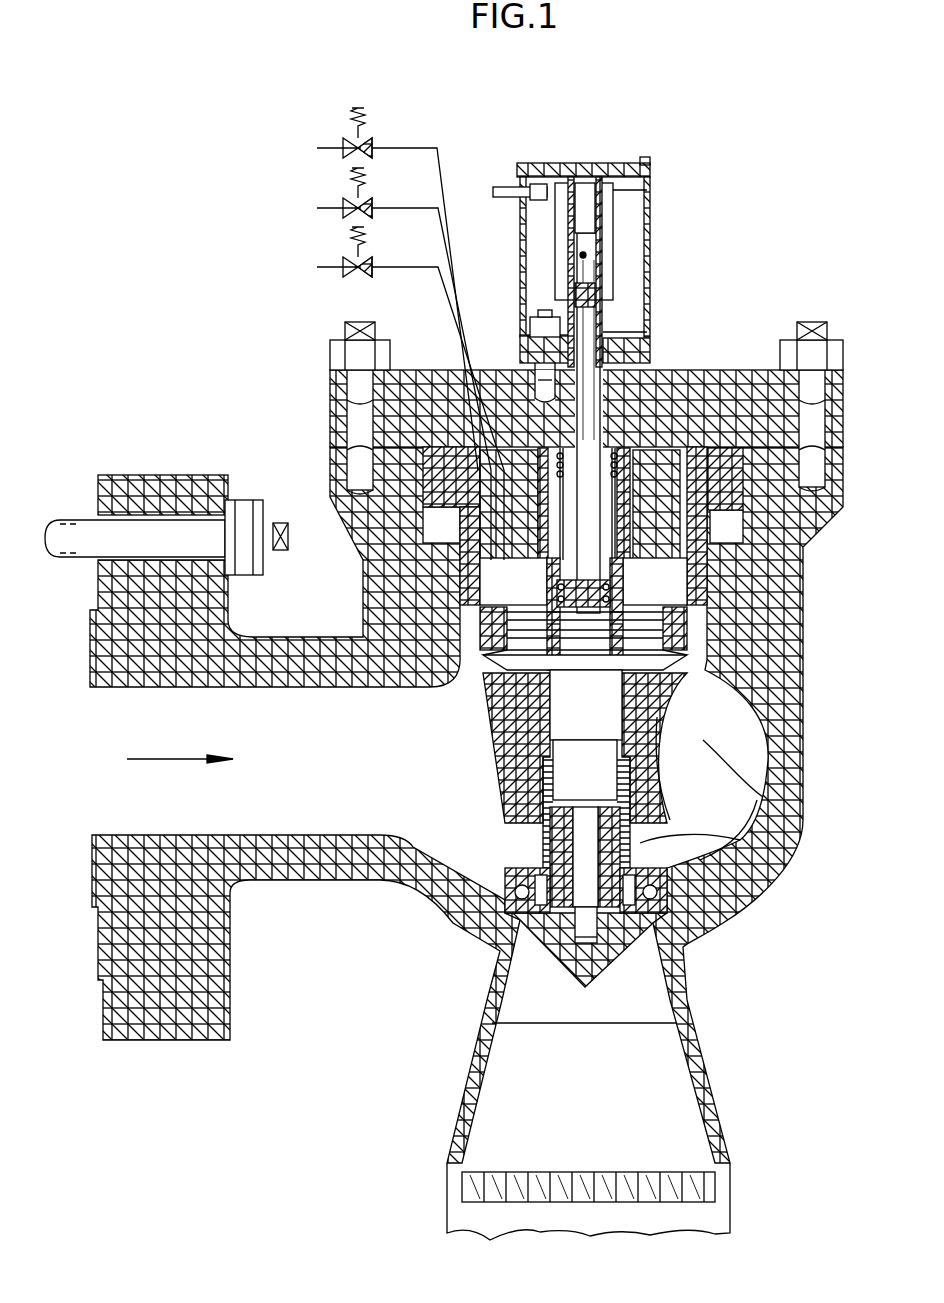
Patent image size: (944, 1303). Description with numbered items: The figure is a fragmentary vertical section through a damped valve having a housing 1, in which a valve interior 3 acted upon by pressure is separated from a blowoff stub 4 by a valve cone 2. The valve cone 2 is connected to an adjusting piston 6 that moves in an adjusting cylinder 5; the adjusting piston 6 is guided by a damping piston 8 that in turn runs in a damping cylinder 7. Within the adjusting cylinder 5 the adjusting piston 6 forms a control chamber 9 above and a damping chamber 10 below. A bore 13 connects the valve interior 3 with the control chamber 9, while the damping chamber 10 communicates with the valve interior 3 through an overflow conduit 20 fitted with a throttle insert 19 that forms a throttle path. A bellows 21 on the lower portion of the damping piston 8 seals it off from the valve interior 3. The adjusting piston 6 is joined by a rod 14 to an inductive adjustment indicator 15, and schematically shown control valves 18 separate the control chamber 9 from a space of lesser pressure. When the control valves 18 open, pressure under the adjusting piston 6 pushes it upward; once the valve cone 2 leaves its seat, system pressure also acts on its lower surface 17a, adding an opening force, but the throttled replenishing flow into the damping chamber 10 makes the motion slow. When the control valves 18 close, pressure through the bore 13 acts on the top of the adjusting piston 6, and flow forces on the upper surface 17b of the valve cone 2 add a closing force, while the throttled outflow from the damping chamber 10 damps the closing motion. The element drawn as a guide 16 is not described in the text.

The housing 1 is at (767, 890).
The valve cone 2 is at (480, 880).
The valve interior 3 is at (703, 742).
The blowoff stub 4 is at (627, 1077).
The adjusting cylinder 5 is at (700, 642).
The adjusting piston 6 is at (690, 660).
The damping cylinder 7 is at (640, 843).
The damping piston 8 is at (598, 720).
The control chamber 9 is at (670, 577).
The damping chamber 10 is at (510, 690).
The bore 13 is at (757, 511).
The rod 14 is at (600, 417).
The inductive adjustment indicator 15 is at (627, 240).
The guide cage 16 is at (520, 740).
The lower surface of the valve cone 17a is at (492, 980).
The upper surface of the valve cone 17b is at (685, 905).
The control valves 18 is at (372, 267).
The throttle insert 19 is at (745, 742).
The overflow conduit 20 is at (717, 673).
The bellows 21 is at (737, 878).